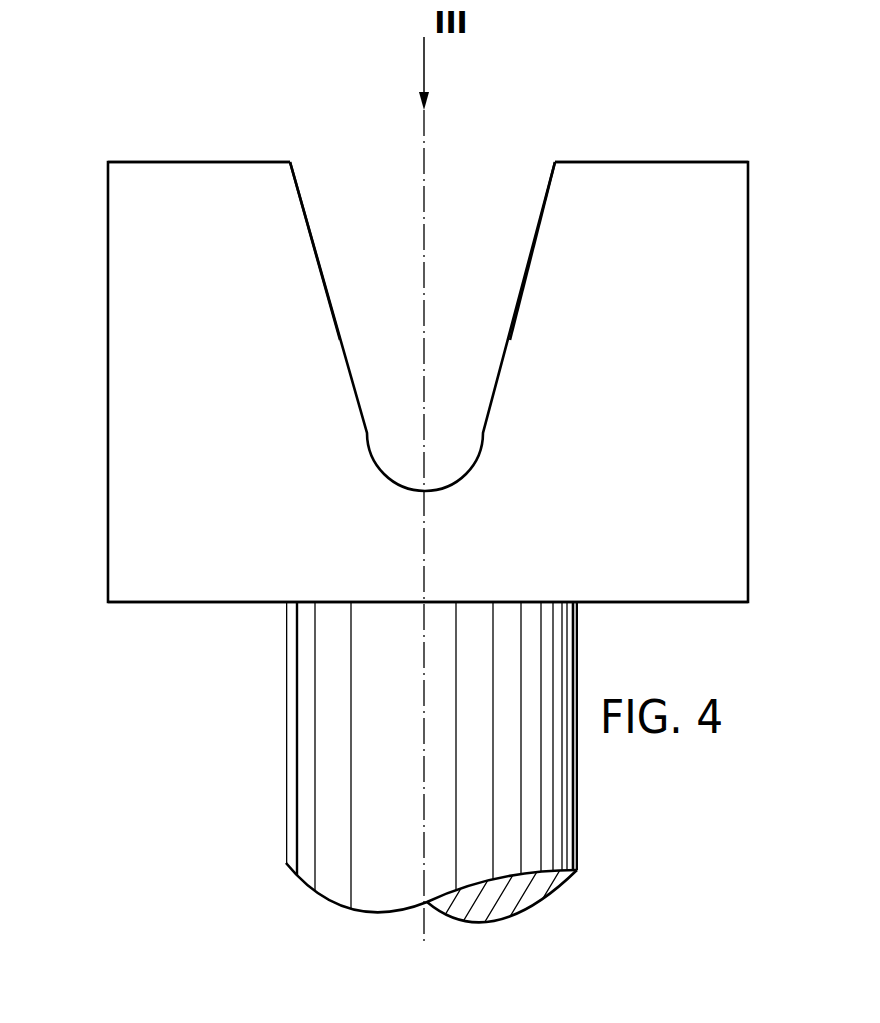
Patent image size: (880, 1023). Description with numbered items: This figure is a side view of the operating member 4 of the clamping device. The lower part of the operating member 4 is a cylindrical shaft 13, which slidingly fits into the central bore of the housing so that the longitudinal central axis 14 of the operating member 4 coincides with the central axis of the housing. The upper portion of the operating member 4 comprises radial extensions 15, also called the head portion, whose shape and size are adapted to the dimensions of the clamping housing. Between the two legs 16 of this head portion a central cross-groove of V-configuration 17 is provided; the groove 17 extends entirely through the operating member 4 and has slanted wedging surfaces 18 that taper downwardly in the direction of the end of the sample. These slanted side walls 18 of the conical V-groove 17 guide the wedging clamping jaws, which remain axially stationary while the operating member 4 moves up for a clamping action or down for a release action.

The operating member 4 is at (210, 370).
The cylindrical shaft 13 is at (332, 743).
The longitudinal central axis 14 is at (424, 367).
The radial extensions 15 is at (208, 538).
The legs 16 is at (126, 253).
The cross-groove of V-configuration 17 is at (459, 298).
The slanted wedging surfaces 18 is at (318, 254).